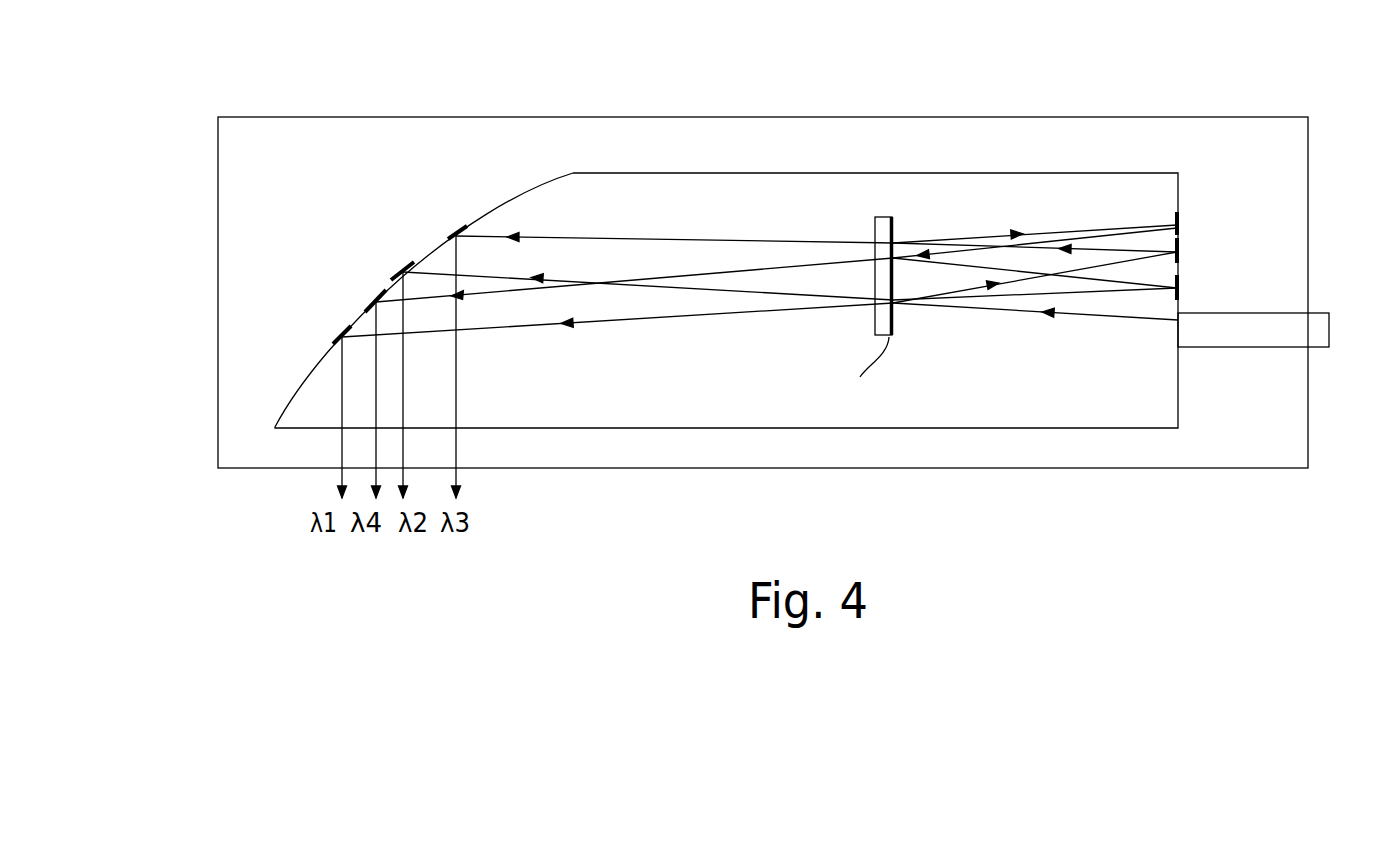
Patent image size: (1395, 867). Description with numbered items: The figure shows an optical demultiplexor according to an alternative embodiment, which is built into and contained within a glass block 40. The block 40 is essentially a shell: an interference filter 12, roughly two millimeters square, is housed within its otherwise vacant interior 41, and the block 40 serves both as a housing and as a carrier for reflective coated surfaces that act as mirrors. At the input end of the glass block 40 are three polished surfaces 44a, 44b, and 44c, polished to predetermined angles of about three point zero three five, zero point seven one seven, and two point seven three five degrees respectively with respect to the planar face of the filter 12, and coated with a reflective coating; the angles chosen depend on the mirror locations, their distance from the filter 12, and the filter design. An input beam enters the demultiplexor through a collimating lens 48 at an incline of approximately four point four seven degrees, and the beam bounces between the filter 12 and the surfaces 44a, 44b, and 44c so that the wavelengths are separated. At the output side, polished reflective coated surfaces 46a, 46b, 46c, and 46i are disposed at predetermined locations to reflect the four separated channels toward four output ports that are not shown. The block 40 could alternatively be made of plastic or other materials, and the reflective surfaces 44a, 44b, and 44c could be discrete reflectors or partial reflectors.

The glass block 40 is at (768, 117).
The vacant interior 41 is at (756, 381).
The interference filter 12 is at (877, 218).
The polished surface 44a is at (1178, 222).
The polished surface 44b is at (1178, 253).
The polished surface 44c is at (1178, 283).
The collimating lens 48 is at (1329, 313).
The polished reflective coated surface 46a is at (376, 298).
The polished reflective coated surface 46b is at (462, 229).
The polished reflective coated surface 46c is at (342, 330).
The polished reflective coated surface 46i is at (403, 269).